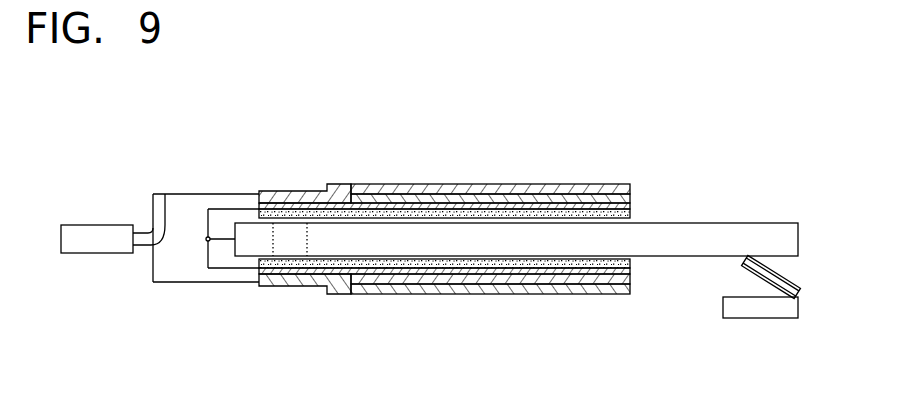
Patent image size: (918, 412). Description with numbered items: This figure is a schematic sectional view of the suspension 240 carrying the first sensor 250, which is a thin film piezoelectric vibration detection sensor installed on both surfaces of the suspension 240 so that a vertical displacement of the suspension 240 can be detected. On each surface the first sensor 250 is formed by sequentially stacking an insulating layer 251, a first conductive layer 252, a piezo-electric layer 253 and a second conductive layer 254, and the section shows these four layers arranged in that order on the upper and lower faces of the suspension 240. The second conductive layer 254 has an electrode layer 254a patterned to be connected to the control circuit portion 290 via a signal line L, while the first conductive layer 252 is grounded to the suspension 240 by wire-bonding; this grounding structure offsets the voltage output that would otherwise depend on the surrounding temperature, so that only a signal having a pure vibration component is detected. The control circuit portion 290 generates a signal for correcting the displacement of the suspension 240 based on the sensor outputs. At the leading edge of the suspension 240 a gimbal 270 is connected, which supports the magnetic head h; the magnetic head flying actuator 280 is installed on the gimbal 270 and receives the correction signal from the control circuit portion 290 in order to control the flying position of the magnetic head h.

The suspension 240 is at (690, 228).
The first sensor 250 is at (424, 145).
The insulating layer 251 is at (365, 212).
The first conductive layer 252 is at (481, 206).
The piezo-electric layer 253 is at (541, 198).
The second conductive layer 254 is at (594, 189).
The electrode layer 254a is at (295, 197).
The gimbal 270 is at (757, 268).
The magnetic head flying actuator 280 is at (783, 278).
The control circuit portion 290 is at (100, 233).
The signal line L is at (153, 214).
The magnetic head h is at (787, 313).